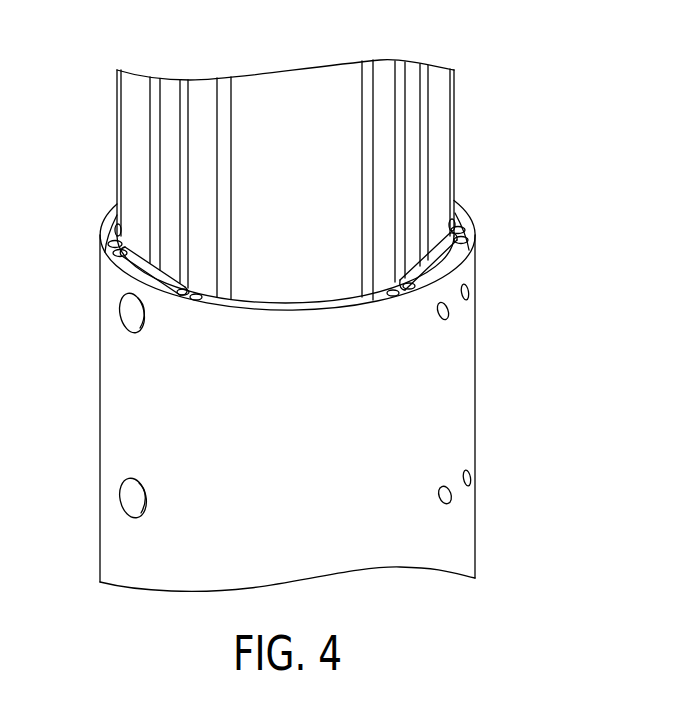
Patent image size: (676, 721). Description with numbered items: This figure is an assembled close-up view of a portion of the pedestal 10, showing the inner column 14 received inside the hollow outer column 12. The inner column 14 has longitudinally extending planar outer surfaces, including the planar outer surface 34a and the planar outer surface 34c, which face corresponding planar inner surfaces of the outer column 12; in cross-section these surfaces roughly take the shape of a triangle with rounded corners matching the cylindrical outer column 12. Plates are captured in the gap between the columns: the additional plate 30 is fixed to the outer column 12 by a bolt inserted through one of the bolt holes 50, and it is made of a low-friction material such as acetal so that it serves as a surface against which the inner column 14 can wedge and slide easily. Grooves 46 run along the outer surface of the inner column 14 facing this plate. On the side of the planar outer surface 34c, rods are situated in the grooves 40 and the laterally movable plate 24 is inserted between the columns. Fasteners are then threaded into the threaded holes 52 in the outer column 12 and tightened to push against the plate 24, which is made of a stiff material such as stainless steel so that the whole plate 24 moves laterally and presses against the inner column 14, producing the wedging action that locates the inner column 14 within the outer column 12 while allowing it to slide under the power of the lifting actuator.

The pedestal 10 is at (339, 300).
The outer column 12 is at (477, 412).
The inner column 14 is at (290, 154).
The plate 24 is at (443, 261).
The additional plate 30 is at (130, 266).
The planar outer surface 34a is at (133, 115).
The planar outer surface 34c is at (442, 163).
The grooves 40 is at (427, 100).
The grooves 46 is at (153, 103).
The bolt holes 50 is at (121, 316).
The threaded holes 52 is at (448, 316).